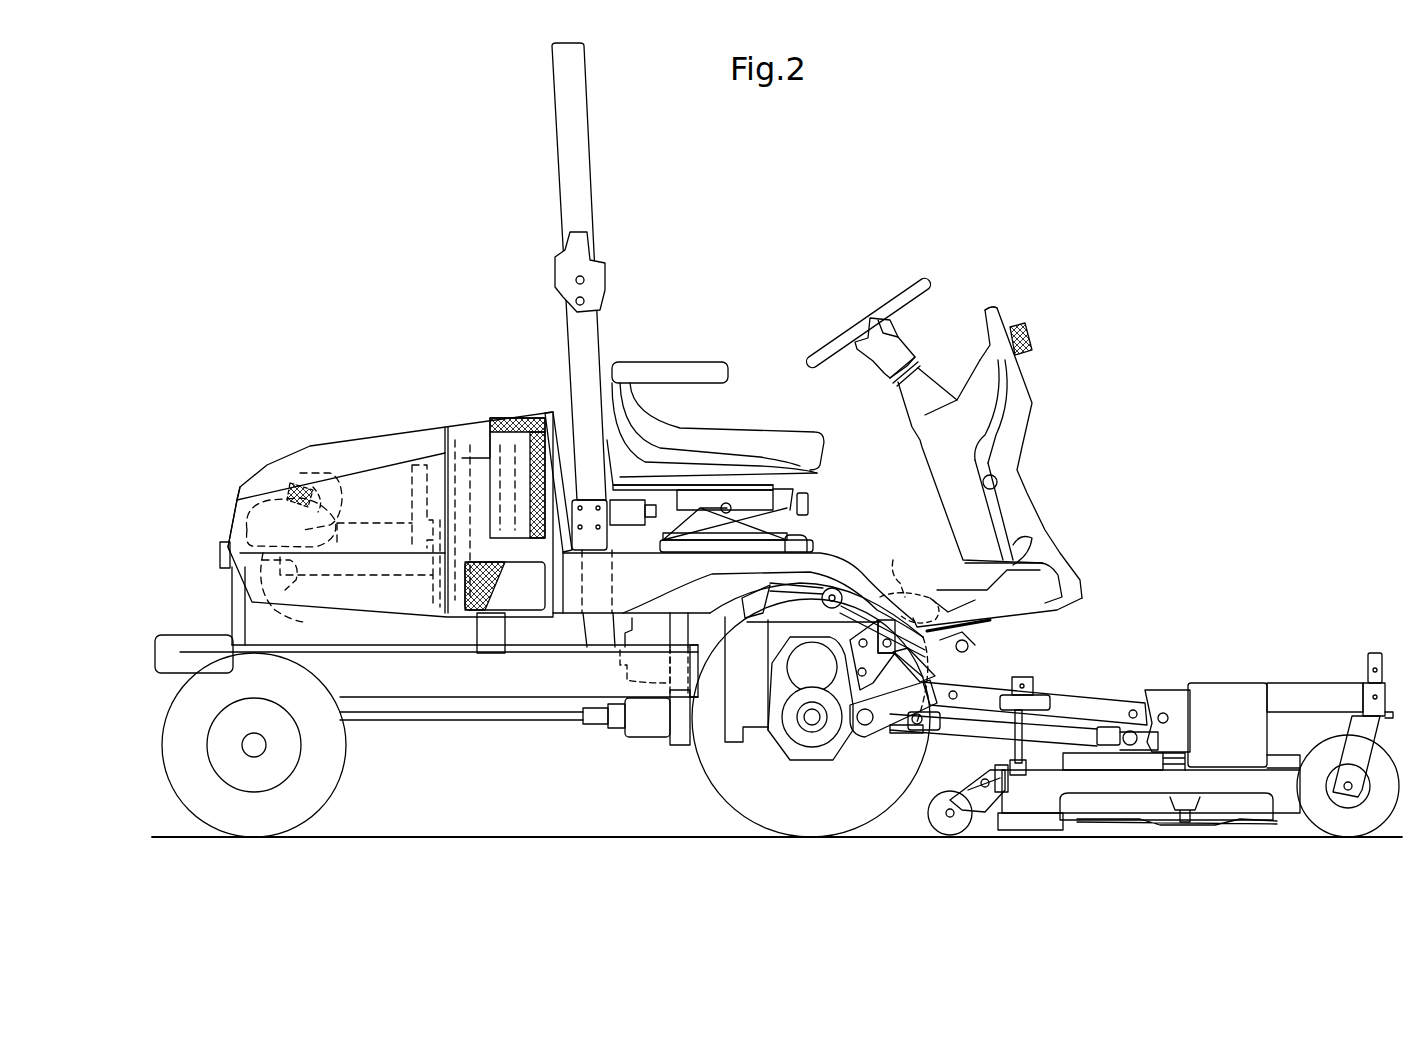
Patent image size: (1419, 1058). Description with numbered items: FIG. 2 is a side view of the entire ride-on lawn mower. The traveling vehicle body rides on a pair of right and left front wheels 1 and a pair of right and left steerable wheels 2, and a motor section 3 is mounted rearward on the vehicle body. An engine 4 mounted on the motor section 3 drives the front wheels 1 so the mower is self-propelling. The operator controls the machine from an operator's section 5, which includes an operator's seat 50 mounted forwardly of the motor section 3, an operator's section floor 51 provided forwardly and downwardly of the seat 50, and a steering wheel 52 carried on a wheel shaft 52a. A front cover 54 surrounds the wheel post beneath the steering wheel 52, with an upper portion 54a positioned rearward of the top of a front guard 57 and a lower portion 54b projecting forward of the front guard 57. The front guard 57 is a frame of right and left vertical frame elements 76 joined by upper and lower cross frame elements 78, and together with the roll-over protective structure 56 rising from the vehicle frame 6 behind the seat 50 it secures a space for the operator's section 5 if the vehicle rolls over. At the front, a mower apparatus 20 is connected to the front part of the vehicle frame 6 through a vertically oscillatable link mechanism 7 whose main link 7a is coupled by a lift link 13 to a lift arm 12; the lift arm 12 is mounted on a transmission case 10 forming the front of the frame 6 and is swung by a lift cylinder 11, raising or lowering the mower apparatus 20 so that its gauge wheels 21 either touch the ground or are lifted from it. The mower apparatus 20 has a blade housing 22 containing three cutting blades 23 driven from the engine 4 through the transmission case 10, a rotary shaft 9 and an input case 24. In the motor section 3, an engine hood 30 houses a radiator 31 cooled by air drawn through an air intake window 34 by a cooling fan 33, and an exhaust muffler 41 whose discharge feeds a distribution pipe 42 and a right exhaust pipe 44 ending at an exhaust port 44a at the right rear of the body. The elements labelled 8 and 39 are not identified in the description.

The front wheels 1 is at (730, 823).
The steerable wheels 2 is at (306, 808).
The motor section 3 is at (390, 472).
The engine 4 is at (368, 532).
The operator's section 5 is at (971, 386).
The vehicle frame 6 is at (500, 700).
The link mechanism 7 is at (1056, 689).
The main link 7a is at (1112, 698).
The hydraulic cylinder 8 is at (562, 722).
The rotary shaft 9 is at (967, 742).
The transmission case 10 is at (787, 752).
The lift cylinder 11 is at (760, 597).
The lift arm 12 is at (894, 609).
The lift link 13 is at (950, 668).
The mower apparatus 20 is at (1163, 732).
The gauge wheels 21 is at (1345, 826).
The blade housing 22 is at (1120, 793).
The cutting blades 23 is at (1240, 828).
The input case 24 is at (1230, 690).
The engine hood 30 is at (384, 437).
The radiator 31 is at (503, 418).
The cooling fan 33 is at (462, 432).
The air intake window 34 is at (533, 412).
The front grille 39 is at (232, 527).
The exhaust muffler 41 is at (235, 510).
The distribution pipe 42 is at (300, 483).
The right exhaust pipe 44 is at (282, 605).
The exhaust port 44a is at (214, 562).
The operator's seat 50 is at (758, 433).
The operator's section floor 51 is at (958, 603).
The steering wheel 52 is at (880, 318).
The wheel shaft 52a is at (897, 380).
The front cover 54 is at (972, 432).
The upper portion of the front cover 54a is at (978, 373).
The lower portion of the front cover 54b is at (1055, 560).
The roll-over protective structure 56 is at (565, 190).
The front guard 57 is at (1002, 305).
The vertical frame elements 76 is at (1020, 380).
The cross frame elements 78 is at (1033, 345).